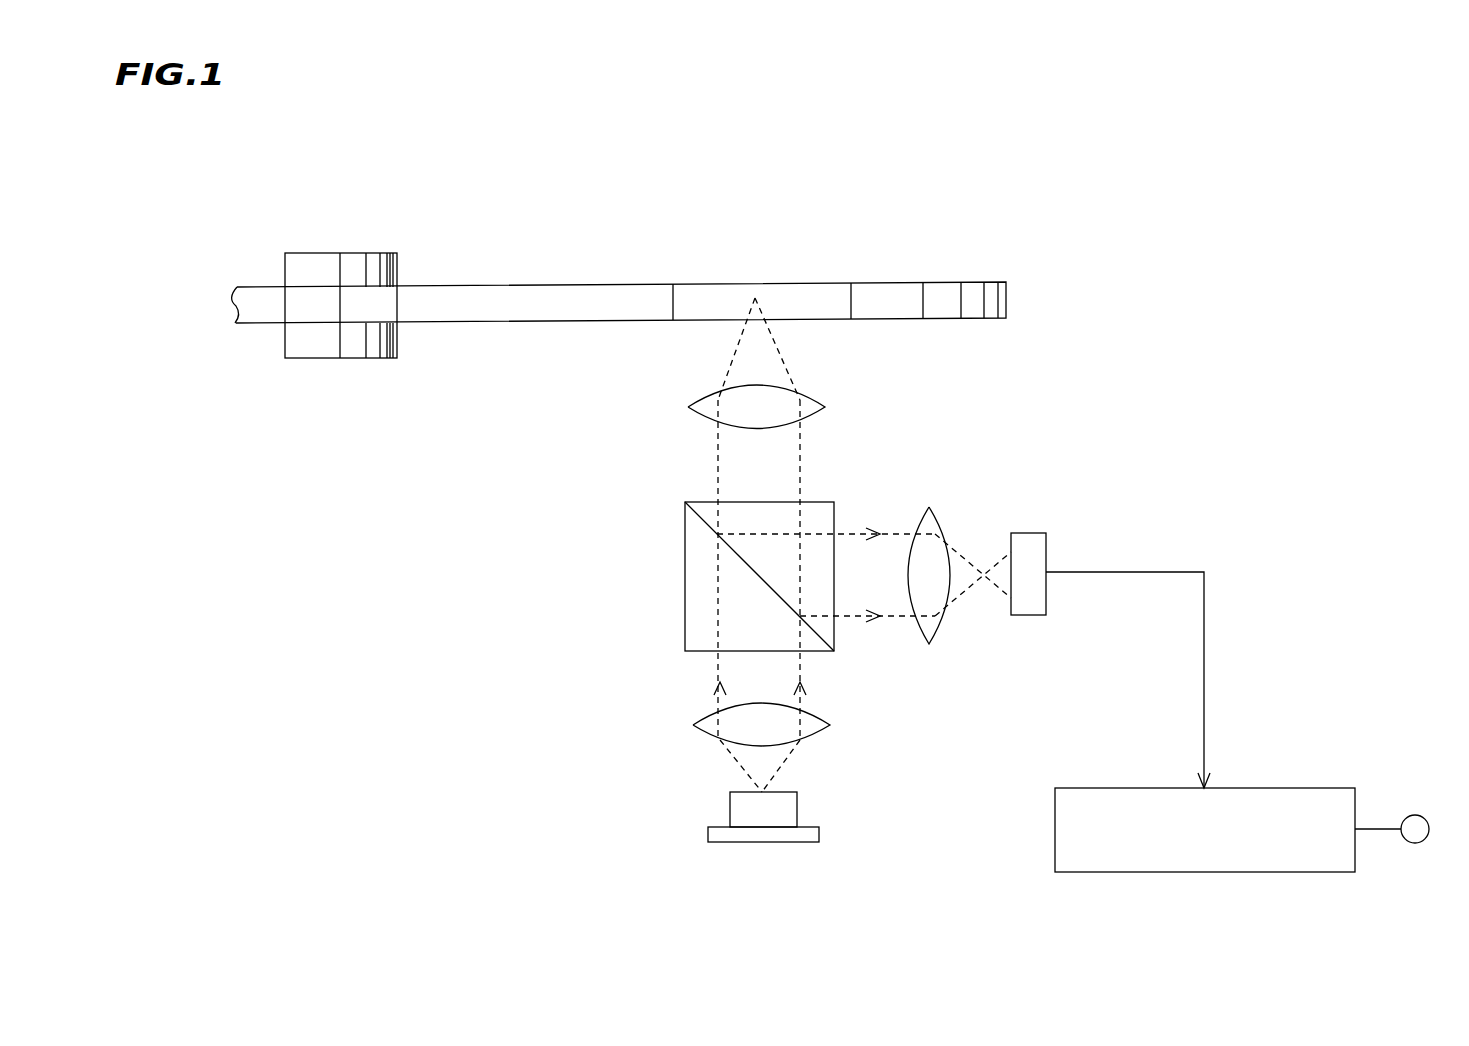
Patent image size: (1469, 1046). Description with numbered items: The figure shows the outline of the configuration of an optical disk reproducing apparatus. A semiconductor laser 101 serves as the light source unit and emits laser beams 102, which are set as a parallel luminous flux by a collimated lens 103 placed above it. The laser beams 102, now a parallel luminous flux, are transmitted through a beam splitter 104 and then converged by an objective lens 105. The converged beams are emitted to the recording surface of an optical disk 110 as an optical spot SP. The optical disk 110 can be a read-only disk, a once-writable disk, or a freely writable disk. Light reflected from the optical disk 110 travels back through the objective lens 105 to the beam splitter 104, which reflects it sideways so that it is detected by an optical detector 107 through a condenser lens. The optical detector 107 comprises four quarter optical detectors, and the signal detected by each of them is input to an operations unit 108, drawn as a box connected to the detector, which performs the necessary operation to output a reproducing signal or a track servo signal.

The semiconductor laser 101 is at (737, 808).
The laser beams 102 is at (719, 682).
The collimated lens 103 is at (712, 738).
The beam splitter 104 is at (685, 564).
The objective lens 105 is at (688, 406).
The optical detector 107 is at (1047, 551).
The operations unit 108 is at (1313, 788).
The optical disk 110 is at (505, 286).
The optical spot SP is at (757, 298).